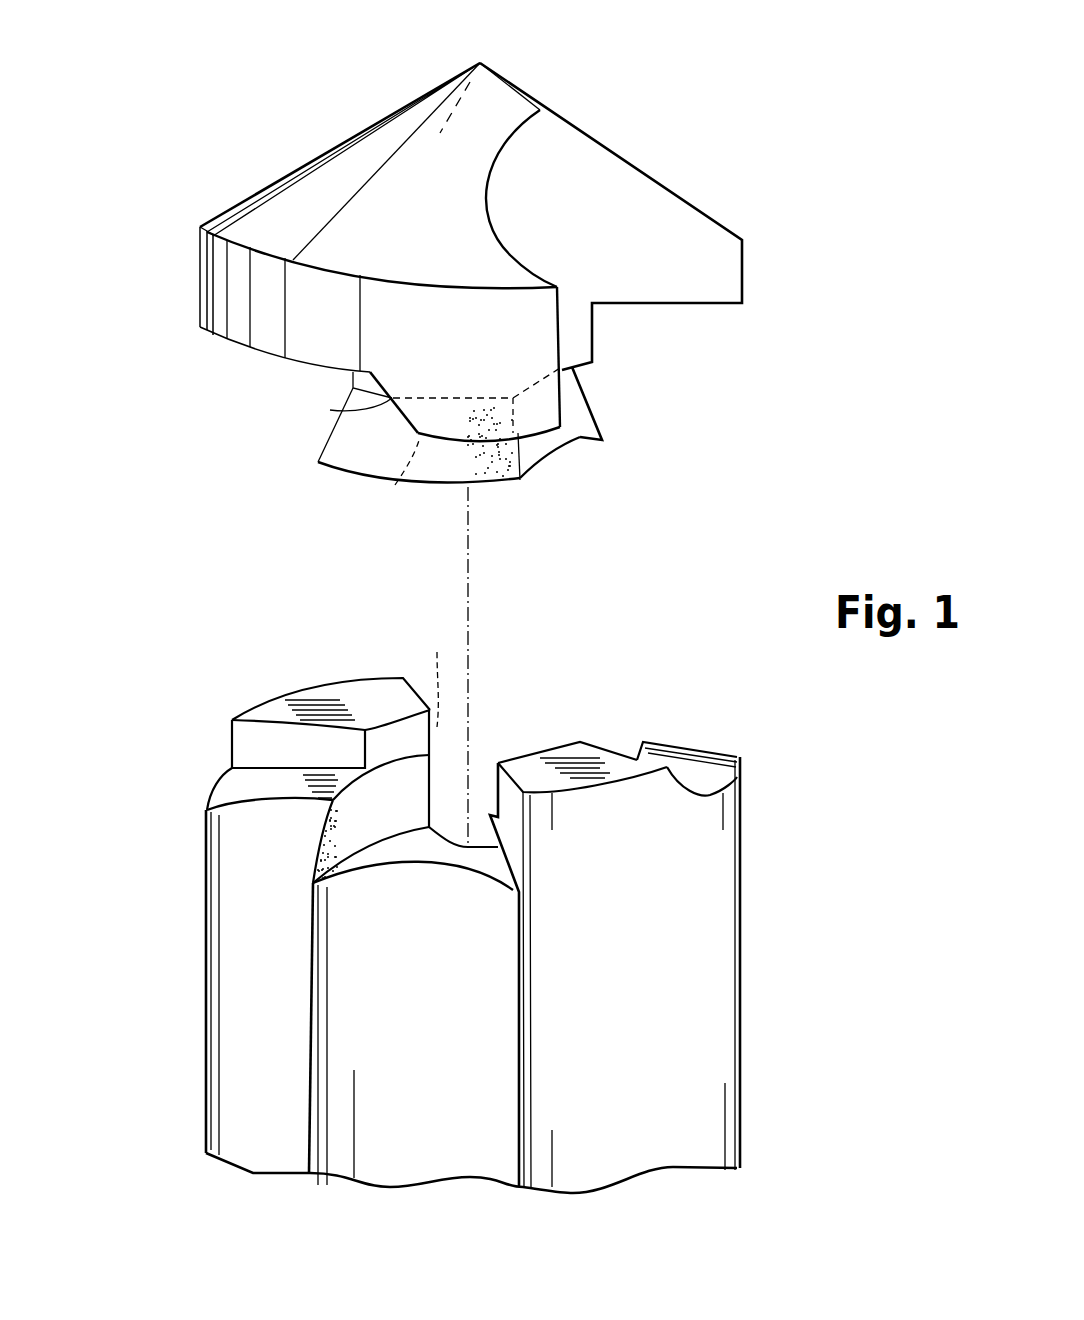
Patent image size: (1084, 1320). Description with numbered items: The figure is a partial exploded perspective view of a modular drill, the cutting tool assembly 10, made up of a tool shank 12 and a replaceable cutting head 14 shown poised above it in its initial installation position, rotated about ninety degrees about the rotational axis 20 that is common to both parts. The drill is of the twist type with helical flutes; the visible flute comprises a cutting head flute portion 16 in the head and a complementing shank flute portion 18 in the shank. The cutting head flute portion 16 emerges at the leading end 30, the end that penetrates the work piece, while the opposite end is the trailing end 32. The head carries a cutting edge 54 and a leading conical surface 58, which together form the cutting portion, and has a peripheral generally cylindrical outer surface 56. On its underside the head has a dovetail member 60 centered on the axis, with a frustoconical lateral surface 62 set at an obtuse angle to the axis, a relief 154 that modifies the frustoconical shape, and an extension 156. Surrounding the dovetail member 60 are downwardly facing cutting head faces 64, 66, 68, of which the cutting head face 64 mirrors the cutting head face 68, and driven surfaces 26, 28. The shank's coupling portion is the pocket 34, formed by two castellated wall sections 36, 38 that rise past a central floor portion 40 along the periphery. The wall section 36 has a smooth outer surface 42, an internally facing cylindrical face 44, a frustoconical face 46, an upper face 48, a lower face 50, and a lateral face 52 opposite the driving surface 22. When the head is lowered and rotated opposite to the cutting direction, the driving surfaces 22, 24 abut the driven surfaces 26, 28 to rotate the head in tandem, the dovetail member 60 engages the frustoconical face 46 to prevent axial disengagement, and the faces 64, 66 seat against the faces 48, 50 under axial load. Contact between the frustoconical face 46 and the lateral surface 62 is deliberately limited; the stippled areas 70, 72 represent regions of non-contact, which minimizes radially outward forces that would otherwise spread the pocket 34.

The cutting tool assembly 10 is at (278, 103).
The tool shank 12 is at (153, 880).
The replaceable cutting head 14 is at (142, 224).
The cutting head flute portion 16 is at (623, 237).
The shank flute portion 18 is at (441, 1014).
The rotational axis 20 is at (468, 557).
The driving surface 22 is at (313, 757).
The driving surface 24 is at (688, 775).
The driven surface 26 is at (330, 410).
The driven surface 28 is at (640, 352).
The leading end 30 is at (659, 123).
The trailing end 32 is at (512, 570).
The pocket 34 is at (612, 614).
The castellated wall section 36 is at (303, 643).
The castellated wall section 38 is at (628, 710).
The central floor portion 40 is at (453, 864).
The smooth outer surface 42 is at (183, 748).
The generally cylindrical face 44 is at (412, 754).
The frustoconical face 46 is at (428, 814).
The upper face 48 is at (380, 709).
The lower face 50 is at (280, 797).
The lateral face 52 is at (432, 676).
The cutting edge 54 is at (493, 215).
The peripheral outer surface 56 is at (335, 315).
The leading conical surface 58 is at (428, 210).
The dovetail member 60 is at (585, 478).
The frustoconical lateral surface 62 is at (382, 449).
The cutting head face 64 is at (242, 345).
The cutting head face 66 is at (395, 485).
The cutting head face 68 is at (697, 303).
The area of non-contact 70 is at (347, 843).
The area of non-contact 72 is at (478, 473).
The relief 154 is at (580, 437).
The extension 156 is at (357, 383).